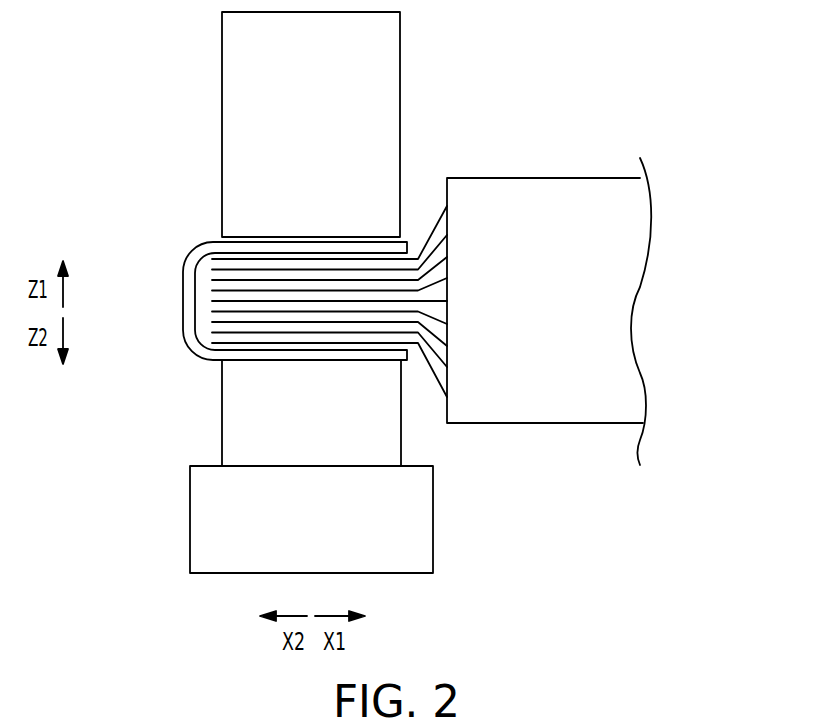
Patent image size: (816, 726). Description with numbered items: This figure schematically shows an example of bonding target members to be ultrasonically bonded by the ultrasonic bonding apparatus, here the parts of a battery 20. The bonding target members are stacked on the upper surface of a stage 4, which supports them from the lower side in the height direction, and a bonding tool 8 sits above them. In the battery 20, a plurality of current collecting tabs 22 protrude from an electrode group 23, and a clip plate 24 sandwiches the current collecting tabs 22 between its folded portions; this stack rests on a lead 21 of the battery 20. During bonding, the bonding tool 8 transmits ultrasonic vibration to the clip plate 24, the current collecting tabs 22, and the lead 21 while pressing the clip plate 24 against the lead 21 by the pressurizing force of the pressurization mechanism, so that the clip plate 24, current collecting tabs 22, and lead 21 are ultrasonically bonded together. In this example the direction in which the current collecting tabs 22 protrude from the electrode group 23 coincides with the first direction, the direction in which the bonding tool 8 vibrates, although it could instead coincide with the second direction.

The stage 4 is at (434, 553).
The bonding tool 8 is at (400, 40).
The battery 20 is at (428, 277).
The lead 21 is at (222, 432).
The current collecting tabs 22 is at (213, 286).
The electrode group 23 is at (552, 178).
The clip plate 24 is at (189, 348).